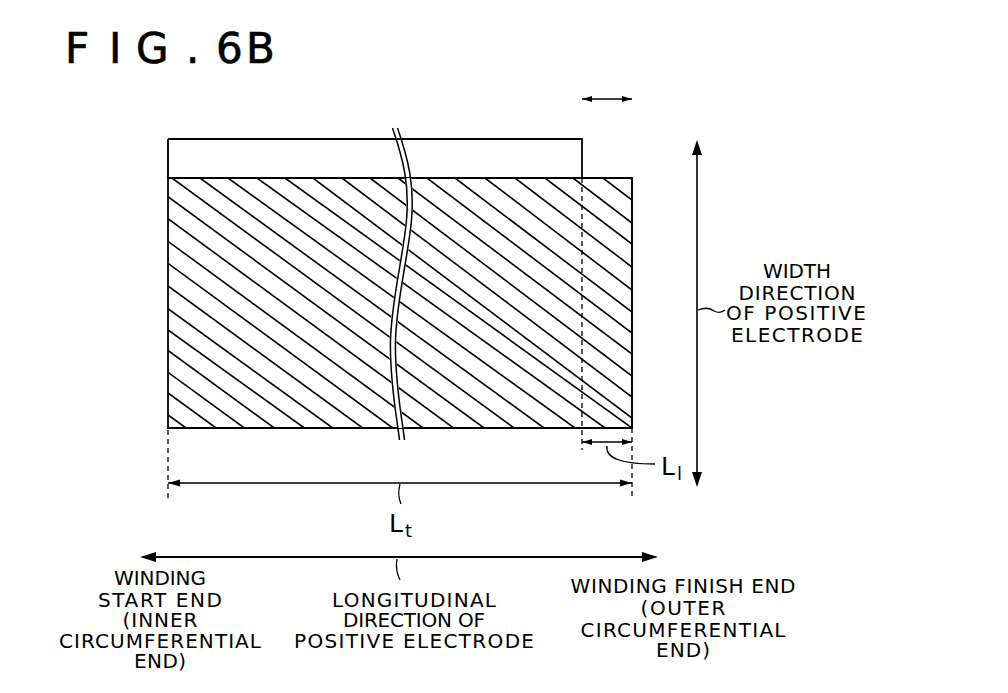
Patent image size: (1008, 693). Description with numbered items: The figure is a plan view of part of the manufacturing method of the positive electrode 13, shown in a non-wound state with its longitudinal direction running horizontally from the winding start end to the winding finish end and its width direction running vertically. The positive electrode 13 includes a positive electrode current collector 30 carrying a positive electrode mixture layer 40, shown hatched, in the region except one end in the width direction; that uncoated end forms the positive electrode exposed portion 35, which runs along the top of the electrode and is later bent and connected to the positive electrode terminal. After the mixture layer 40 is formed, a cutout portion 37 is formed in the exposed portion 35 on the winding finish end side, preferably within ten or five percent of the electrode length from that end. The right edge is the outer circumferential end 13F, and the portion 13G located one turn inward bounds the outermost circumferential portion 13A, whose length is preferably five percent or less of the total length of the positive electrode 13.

The positive electrode 13 is at (430, 88).
The outermost circumferential portion 13A is at (607, 97).
The outer circumferential end 13F is at (632, 168).
The portion located inward by one turn 13G is at (582, 128).
The positive electrode current collector 30 is at (443, 154).
The positive electrode exposed portion 35 is at (167, 140).
The cutout portion 37 is at (608, 160).
The positive electrode mixture layer 40 is at (518, 190).